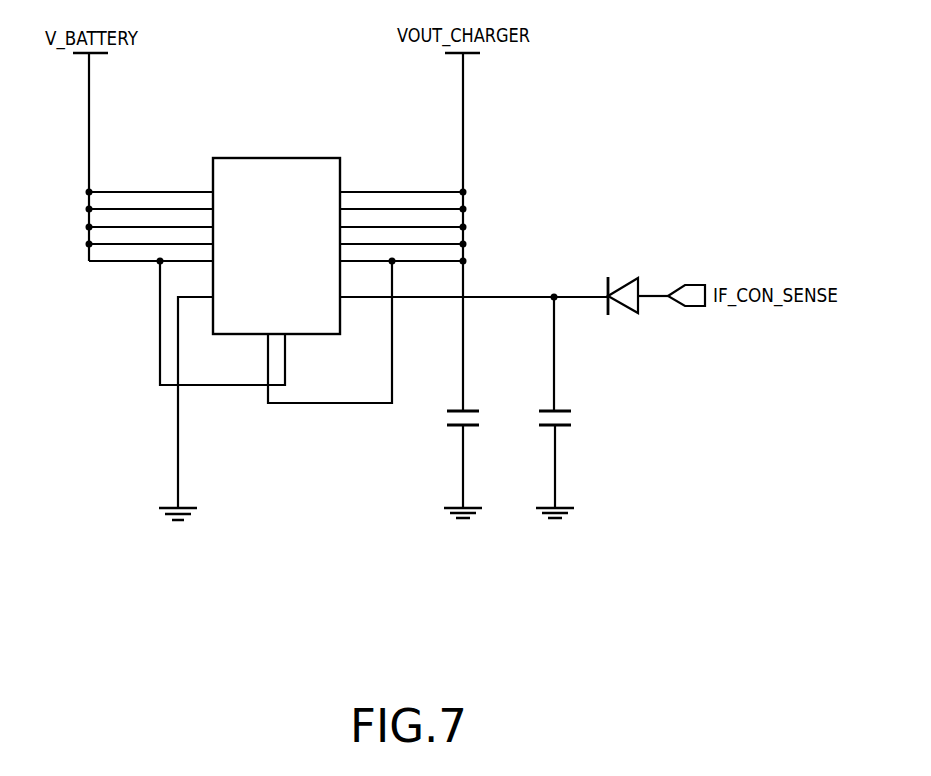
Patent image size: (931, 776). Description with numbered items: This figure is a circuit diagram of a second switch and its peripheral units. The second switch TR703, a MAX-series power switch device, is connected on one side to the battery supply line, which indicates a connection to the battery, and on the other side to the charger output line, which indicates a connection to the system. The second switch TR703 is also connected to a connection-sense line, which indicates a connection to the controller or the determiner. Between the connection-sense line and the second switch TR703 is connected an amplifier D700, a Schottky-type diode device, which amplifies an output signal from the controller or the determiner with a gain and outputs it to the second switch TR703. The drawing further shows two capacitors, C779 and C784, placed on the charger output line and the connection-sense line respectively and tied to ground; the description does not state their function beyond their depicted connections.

The second switch TR703 is at (277, 230).
The amplifier D700 is at (626, 273).
The 10000nF 10V capacitor C779 is at (434, 464).
The 2200nF 10V capacitor C784 is at (529, 464).